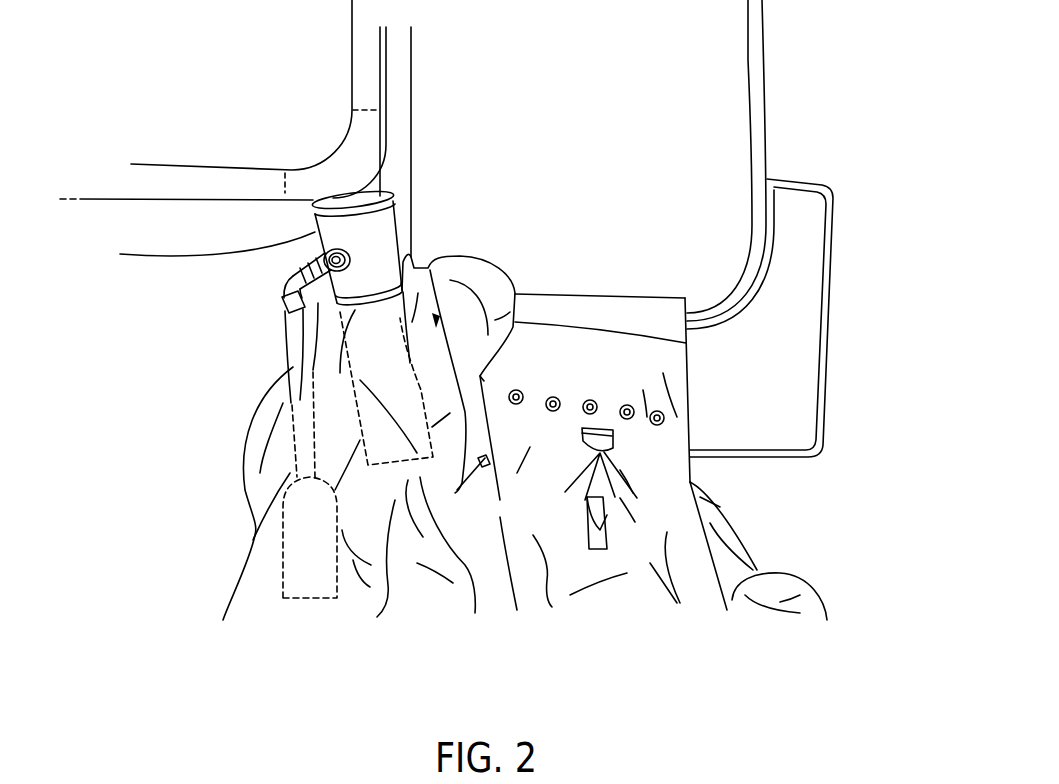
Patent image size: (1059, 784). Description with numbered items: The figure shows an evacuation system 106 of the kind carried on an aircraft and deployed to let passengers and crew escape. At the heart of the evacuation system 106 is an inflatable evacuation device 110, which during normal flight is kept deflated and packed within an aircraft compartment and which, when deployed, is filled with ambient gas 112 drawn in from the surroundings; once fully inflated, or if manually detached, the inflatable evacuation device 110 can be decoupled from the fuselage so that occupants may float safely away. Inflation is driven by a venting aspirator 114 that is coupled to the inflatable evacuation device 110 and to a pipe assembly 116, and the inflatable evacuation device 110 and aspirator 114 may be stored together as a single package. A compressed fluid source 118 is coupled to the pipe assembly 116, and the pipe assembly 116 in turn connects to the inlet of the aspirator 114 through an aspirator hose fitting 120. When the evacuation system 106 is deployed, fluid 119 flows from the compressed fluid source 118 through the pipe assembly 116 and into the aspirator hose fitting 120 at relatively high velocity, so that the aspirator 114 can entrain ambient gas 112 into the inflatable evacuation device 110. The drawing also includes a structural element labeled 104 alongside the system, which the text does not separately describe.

The support post 104 is at (767, 46).
The evacuation system 106 is at (122, 394).
The inflatable evacuation device 110 is at (492, 592).
The ambient gas 112 is at (335, 139).
The venting aspirator 114 is at (403, 203).
The pipe assembly 116 is at (284, 324).
The compressed fluid source 118 is at (300, 600).
The fluid 119 is at (327, 551).
The aspirator hose fitting 120 is at (327, 253).